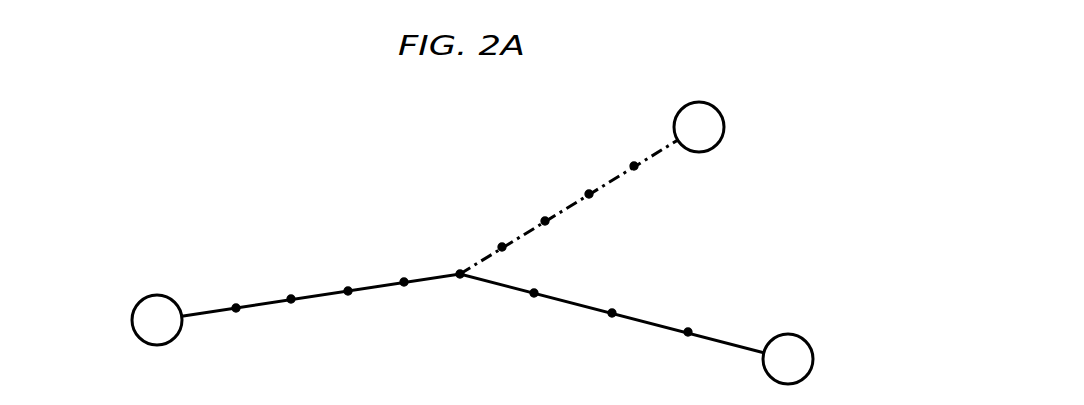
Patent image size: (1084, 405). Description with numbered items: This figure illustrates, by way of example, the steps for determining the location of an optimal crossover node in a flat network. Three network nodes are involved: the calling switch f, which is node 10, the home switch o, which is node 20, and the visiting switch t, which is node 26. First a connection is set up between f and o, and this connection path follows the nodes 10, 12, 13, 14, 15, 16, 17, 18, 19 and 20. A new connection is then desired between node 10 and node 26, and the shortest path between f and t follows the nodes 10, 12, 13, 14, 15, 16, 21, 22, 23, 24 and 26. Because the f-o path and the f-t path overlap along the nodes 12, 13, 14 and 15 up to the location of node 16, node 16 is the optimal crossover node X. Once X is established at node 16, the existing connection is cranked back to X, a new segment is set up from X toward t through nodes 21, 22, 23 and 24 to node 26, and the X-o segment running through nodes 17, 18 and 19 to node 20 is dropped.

The calling switch node f 10 is at (132, 322).
The network node 12 is at (236, 308).
The network node 13 is at (291, 299).
The network node 14 is at (348, 291).
The network node 15 is at (404, 282).
The optimal crossover node X 16 is at (460, 274).
The network node 17 is at (534, 293).
The network node 18 is at (612, 313).
The network node 19 is at (688, 332).
The home switch node o 20 is at (813, 361).
The network node 21 is at (502, 247).
The network node 22 is at (545, 221).
The network node 23 is at (589, 194).
The network node 24 is at (634, 166).
The visiting switch node t 26 is at (724, 129).